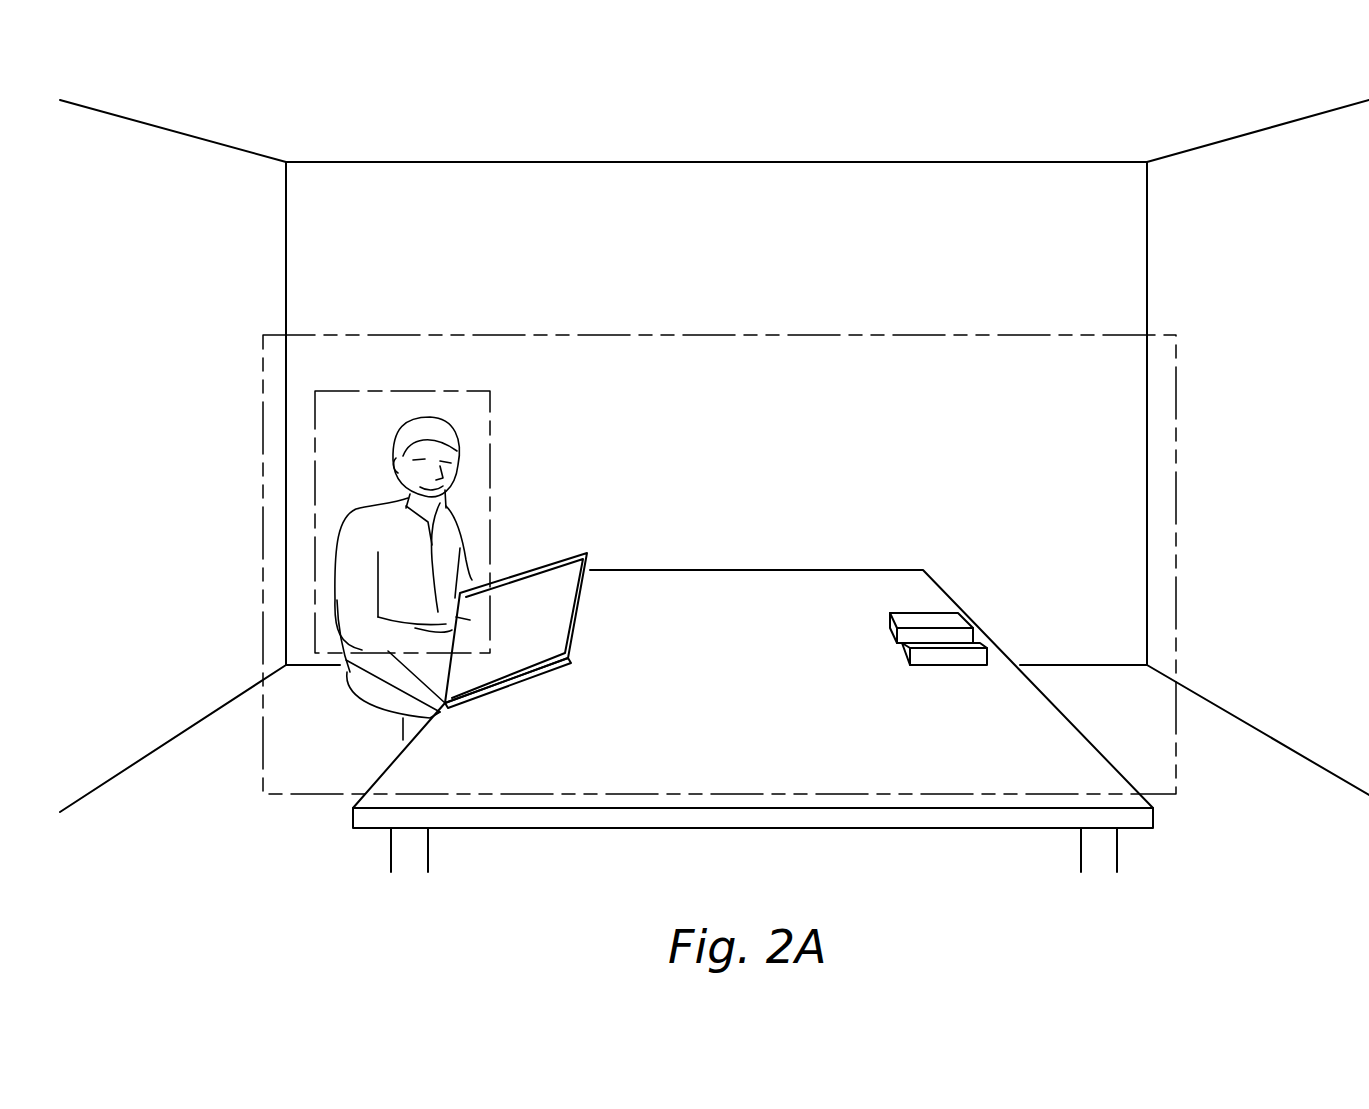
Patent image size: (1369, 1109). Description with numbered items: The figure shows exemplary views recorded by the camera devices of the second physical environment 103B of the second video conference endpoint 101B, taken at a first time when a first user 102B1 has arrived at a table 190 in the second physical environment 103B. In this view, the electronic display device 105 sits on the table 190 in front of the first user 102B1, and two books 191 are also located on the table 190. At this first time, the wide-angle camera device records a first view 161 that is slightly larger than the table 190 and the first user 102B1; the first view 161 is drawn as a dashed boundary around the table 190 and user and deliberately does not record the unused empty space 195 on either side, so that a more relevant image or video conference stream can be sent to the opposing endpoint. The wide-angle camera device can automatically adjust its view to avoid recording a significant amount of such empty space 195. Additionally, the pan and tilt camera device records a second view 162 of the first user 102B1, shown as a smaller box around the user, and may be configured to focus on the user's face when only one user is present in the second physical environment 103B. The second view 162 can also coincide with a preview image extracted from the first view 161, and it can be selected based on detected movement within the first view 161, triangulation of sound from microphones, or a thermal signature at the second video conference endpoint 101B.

The second video conference endpoint 101B is at (168, 866).
The first user 102B1 is at (447, 433).
The second physical environment 103B is at (777, 409).
The electronic display device 105 is at (528, 670).
The first view 161 is at (930, 335).
The second view 162 is at (451, 389).
The table 190 is at (711, 570).
The books 191 is at (885, 620).
The empty space 195 is at (158, 450).